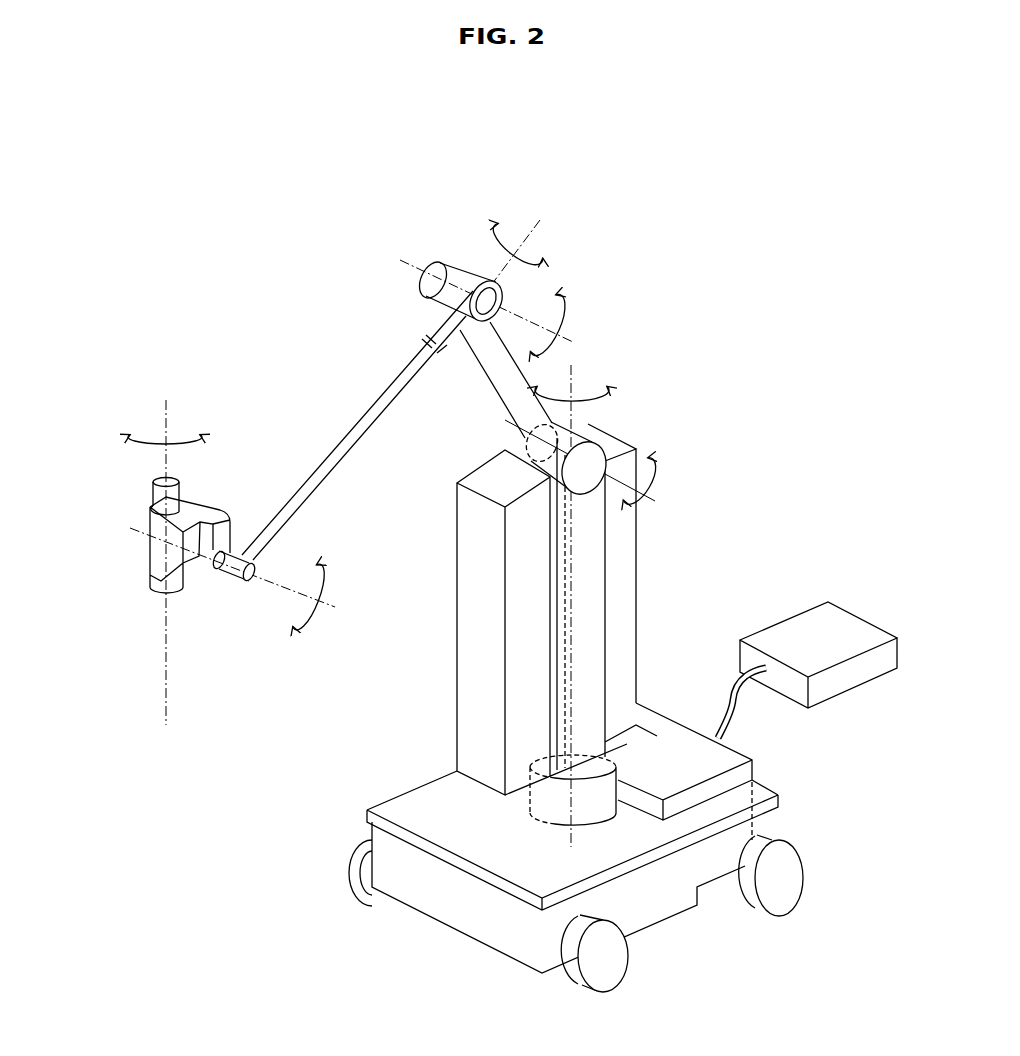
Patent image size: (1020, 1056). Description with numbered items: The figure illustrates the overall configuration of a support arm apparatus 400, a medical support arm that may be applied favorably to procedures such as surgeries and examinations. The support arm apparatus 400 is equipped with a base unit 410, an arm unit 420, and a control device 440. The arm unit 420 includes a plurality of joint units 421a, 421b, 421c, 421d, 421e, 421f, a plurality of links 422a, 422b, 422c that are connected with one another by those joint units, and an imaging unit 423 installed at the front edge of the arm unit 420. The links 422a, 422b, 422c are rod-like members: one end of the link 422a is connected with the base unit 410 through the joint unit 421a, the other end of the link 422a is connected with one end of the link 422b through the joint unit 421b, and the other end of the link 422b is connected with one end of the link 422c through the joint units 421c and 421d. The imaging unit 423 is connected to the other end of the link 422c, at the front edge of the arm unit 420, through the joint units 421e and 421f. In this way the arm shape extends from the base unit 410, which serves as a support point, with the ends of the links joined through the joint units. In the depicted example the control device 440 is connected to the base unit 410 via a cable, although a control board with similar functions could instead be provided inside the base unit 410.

The support arm apparatus 400 is at (681, 182).
The base unit 410 is at (493, 838).
The arm unit 420 is at (600, 303).
The joint unit 421a is at (607, 813).
The joint unit 421b is at (604, 446).
The joint unit 421c is at (452, 268).
The joint unit 421d is at (426, 343).
The joint unit 421e is at (254, 551).
The joint unit 421f is at (152, 493).
The link 422a is at (593, 617).
The link 422b is at (506, 380).
The link 422c is at (331, 448).
The imaging unit 423 is at (150, 540).
The control device 440 is at (810, 605).